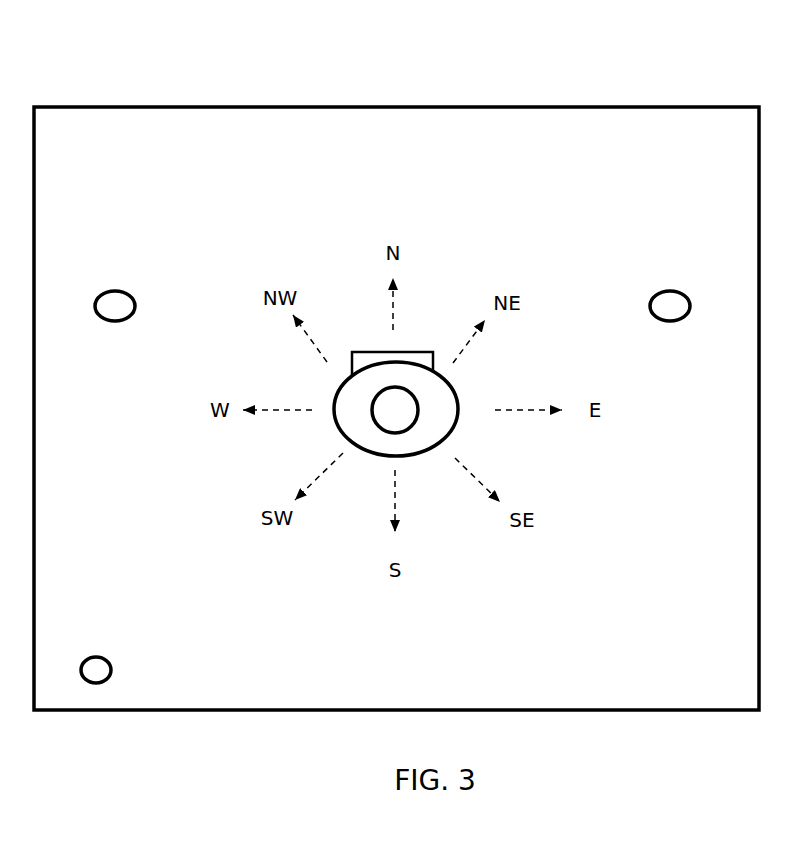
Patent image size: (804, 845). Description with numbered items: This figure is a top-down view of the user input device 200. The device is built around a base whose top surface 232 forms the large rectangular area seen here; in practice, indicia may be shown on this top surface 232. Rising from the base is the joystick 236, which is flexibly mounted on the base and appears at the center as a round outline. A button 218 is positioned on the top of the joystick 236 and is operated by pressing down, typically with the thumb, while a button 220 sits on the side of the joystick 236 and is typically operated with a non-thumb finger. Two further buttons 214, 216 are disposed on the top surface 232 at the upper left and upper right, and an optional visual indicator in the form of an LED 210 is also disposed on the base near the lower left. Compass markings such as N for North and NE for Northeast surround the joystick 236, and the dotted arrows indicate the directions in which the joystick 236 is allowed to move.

The user input device 200 is at (610, 80).
The LED 210 is at (100, 657).
The button 214 is at (113, 292).
The button 216 is at (672, 291).
The button 218 is at (403, 407).
The button 220 is at (415, 352).
The top surface 232 is at (139, 486).
The joystick 236 is at (378, 440).